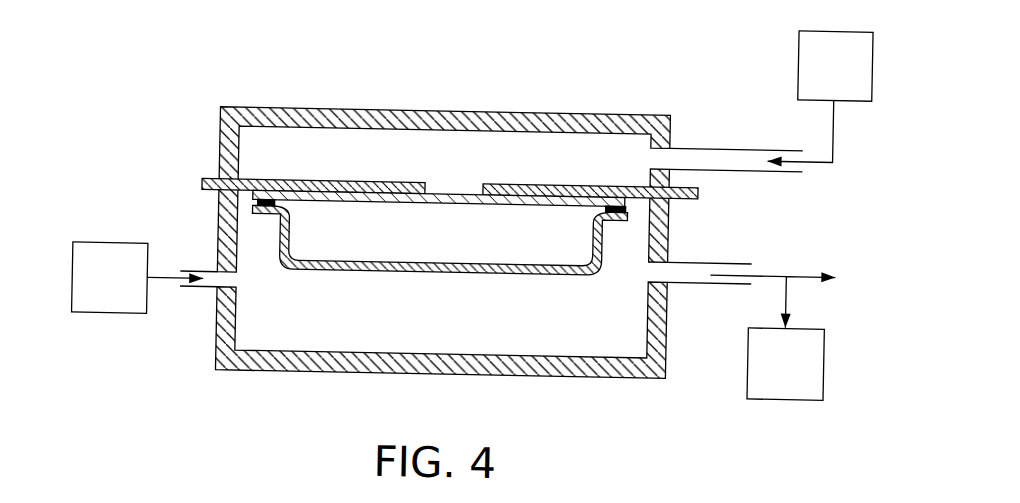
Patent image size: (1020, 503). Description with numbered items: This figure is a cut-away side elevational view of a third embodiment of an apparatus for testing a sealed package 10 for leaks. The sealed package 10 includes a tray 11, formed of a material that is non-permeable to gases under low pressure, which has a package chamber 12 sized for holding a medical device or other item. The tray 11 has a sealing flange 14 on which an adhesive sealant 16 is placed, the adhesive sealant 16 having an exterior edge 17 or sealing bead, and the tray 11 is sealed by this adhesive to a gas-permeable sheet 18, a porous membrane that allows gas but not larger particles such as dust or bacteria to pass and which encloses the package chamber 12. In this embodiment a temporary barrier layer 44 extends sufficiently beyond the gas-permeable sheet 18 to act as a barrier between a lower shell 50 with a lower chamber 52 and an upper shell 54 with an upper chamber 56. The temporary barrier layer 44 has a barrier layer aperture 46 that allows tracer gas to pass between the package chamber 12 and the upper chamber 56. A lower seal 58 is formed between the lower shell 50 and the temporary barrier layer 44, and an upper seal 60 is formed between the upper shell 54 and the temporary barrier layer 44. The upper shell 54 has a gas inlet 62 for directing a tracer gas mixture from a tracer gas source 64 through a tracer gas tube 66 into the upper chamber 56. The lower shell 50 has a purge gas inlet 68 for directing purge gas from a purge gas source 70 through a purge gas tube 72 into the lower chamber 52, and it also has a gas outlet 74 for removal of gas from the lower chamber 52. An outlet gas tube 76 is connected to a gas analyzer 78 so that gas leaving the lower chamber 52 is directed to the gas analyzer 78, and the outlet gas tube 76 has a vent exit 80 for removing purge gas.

The sealed package 10 is at (373, 275).
The tray 11 is at (433, 273).
The package chamber 12 is at (485, 247).
The sealing flange 14 is at (273, 218).
The adhesive sealant 16 is at (603, 210).
The exterior edge 17 is at (634, 213).
The gas-permeable sheet 18 is at (366, 204).
The temporary barrier layer 44 is at (206, 185).
The barrier layer aperture 46 is at (449, 191).
The lower shell 50 is at (355, 375).
The lower chamber 52 is at (509, 331).
The upper shell 54 is at (463, 106).
The upper chamber 56 is at (521, 165).
The lower seal 58 is at (671, 201).
The upper seal 60 is at (234, 185).
The gas inlet 62 is at (646, 156).
The tracer gas source 64 is at (818, 73).
The tracer gas tube 66 is at (729, 142).
The purge gas inlet 68 is at (243, 282).
The purge gas source 70 is at (96, 299).
The purge gas tube 72 is at (199, 293).
The gas outlet 74 is at (649, 271).
The outlet gas tube 76 is at (711, 283).
The gas analyzer 78 is at (774, 372).
The vent exit 80 is at (804, 270).